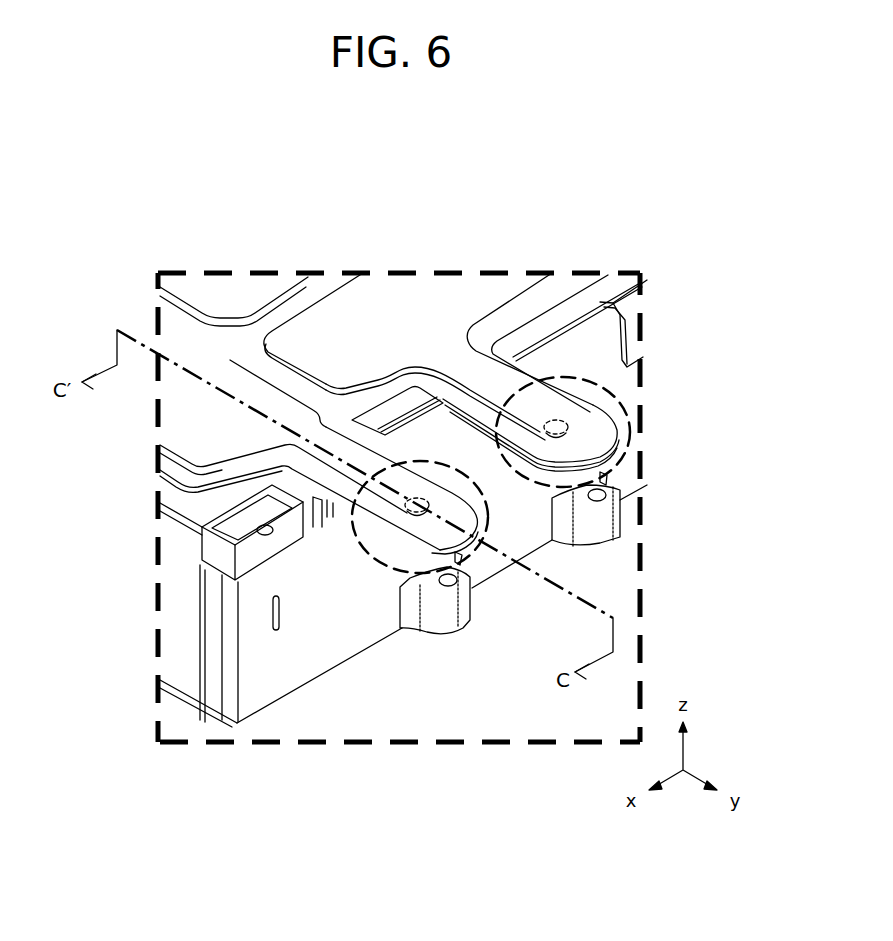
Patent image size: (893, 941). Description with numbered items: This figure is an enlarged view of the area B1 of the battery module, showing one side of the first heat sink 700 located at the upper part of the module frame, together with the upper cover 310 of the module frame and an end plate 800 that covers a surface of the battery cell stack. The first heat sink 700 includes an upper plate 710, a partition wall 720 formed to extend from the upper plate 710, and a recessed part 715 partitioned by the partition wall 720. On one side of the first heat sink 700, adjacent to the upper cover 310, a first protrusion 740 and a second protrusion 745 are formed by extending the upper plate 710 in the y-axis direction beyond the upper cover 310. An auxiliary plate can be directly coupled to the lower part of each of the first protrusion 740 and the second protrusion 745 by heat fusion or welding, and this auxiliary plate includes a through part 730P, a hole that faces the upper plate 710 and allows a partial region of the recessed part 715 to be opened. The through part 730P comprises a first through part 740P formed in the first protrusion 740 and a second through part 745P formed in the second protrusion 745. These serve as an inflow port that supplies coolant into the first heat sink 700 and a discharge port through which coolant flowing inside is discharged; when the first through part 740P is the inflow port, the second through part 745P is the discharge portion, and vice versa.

The first heat sink 700 is at (527, 196).
The upper plate 710 is at (517, 313).
The recessed part 715 is at (423, 307).
The partition wall 720 is at (293, 303).
The through part 730P is at (345, 832).
The first protrusion 740 is at (353, 540).
The first through part 740P is at (417, 508).
The second protrusion 745 is at (618, 402).
The second through part 745P is at (555, 432).
The upper cover 310 is at (440, 470).
The end plate 800 is at (262, 655).
The area B1 is at (158, 600).